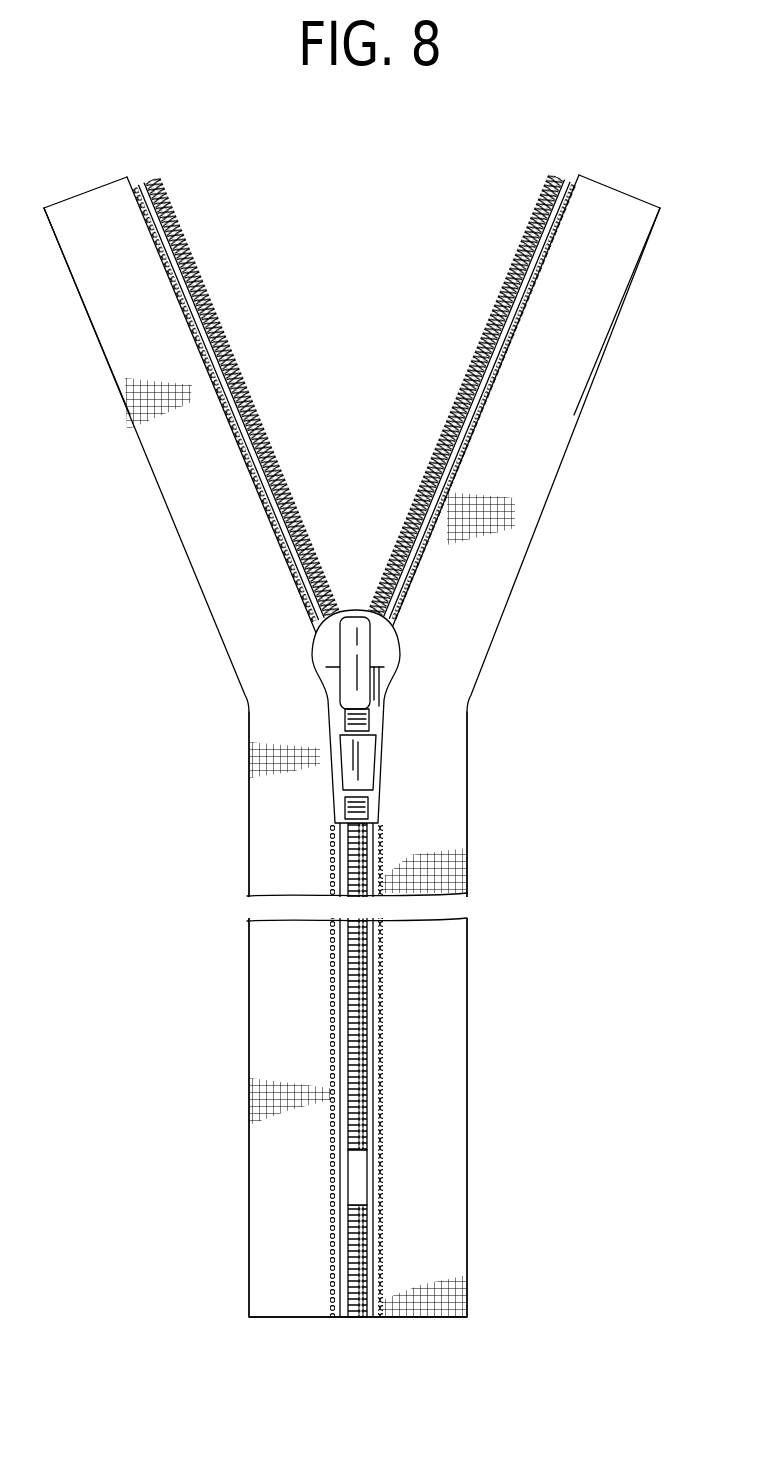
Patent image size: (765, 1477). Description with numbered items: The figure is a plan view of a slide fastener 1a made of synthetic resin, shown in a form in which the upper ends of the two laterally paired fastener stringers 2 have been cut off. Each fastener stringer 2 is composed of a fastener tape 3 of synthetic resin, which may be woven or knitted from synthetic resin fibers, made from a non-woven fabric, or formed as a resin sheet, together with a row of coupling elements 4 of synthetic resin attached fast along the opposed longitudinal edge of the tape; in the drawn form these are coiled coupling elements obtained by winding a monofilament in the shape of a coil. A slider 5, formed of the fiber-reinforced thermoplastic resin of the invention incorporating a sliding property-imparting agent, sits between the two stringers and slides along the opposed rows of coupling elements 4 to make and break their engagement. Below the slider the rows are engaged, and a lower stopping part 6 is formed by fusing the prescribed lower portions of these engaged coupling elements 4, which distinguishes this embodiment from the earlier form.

The slide fastener 1a is at (484, 678).
The fastener stringers 2 is at (88, 184).
The fastener tapes 3 is at (260, 1015).
The coupling elements 4 is at (445, 450).
The slider 5 is at (389, 747).
The lower stopping part 6 is at (362, 1178).